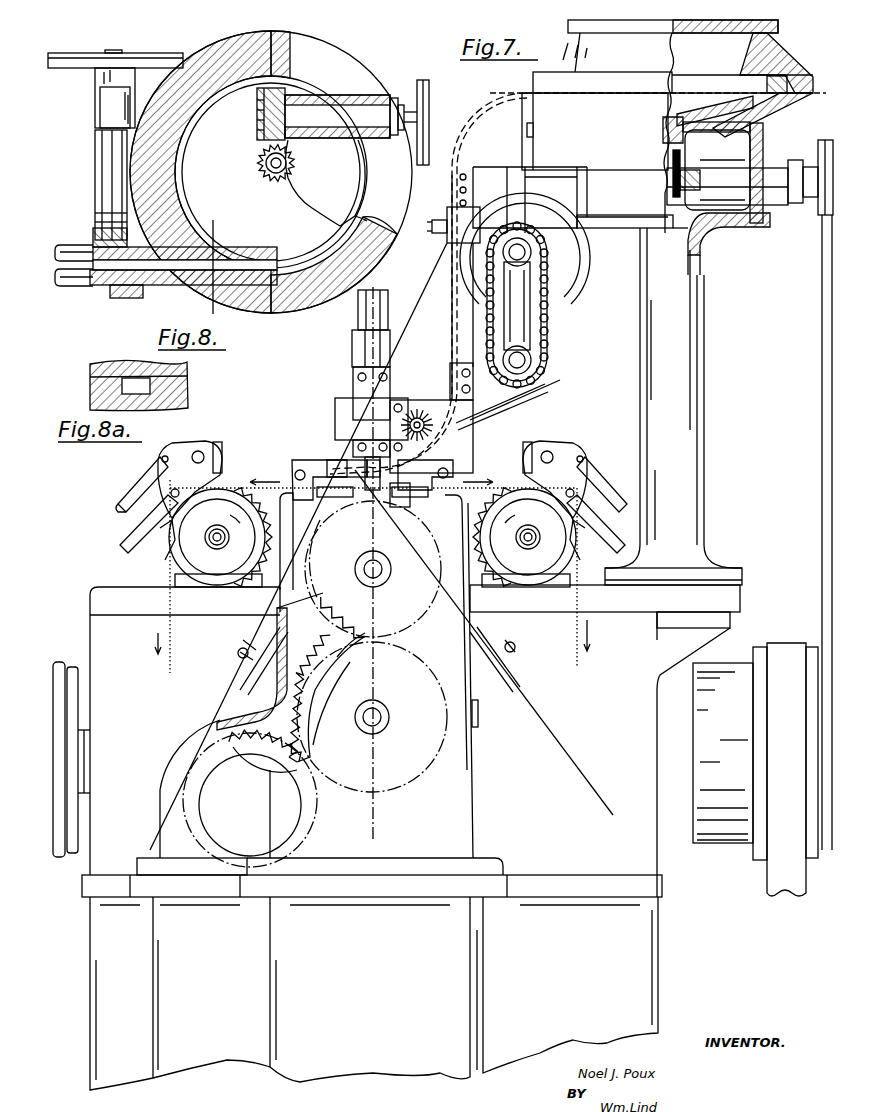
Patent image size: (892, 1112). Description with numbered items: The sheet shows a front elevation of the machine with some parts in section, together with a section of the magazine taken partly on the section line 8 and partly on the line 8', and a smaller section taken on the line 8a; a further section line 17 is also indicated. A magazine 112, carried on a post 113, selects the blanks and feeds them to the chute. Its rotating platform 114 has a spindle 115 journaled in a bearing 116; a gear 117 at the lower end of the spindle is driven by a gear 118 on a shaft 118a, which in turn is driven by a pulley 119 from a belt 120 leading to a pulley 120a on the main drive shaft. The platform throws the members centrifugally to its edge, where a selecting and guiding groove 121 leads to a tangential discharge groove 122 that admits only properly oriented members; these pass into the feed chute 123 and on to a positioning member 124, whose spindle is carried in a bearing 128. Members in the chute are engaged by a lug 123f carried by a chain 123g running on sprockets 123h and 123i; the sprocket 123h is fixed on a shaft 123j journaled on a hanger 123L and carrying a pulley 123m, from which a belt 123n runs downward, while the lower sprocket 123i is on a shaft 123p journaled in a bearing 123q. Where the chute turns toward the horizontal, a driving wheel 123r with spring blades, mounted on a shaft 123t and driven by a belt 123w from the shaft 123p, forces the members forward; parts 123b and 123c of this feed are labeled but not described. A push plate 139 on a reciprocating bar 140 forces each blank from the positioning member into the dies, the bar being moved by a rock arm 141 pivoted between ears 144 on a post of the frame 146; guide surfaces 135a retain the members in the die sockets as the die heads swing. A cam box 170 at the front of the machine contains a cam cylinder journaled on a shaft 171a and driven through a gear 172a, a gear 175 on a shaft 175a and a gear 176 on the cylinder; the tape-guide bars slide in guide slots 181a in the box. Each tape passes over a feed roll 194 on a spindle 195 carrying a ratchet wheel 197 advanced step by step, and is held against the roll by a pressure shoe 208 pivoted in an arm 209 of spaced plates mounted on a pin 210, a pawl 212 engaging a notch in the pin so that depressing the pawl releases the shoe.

In FIG. 7, the section line 8— 8 is at (649, 94).
In FIG. 7, the section line 8' is at (664, 173).
In FIG. 8, the section line 8a— 8a is at (218, 268).
In FIG. 7, the section line 17— 17 is at (371, 561).
In FIG. 8, the magazine 112 is at (222, 47).
In FIG. 7, the magazine 112 is at (760, 68).
In FIG. 7, the post 113 is at (702, 352).
In FIG. 8, the rotating platform 114 is at (302, 208).
In FIG. 7, the rotating platform 114 is at (710, 114).
In FIG. 8, the spindle 115 is at (274, 172).
In FIG. 7, the spindle 115 is at (670, 138).
In FIG. 7, the bearing 116 is at (694, 157).
In FIG. 8, the gear 117 is at (294, 170).
In FIG. 7, the gear 117 is at (703, 184).
In FIG. 8, the gear 118 is at (279, 88).
In FIG. 8, the shaft 118a is at (322, 112).
In FIG. 7, the shaft 118a is at (790, 199).
In FIG. 8, the pulley 119 is at (422, 98).
In FIG. 7, the pulley 119 is at (818, 143).
In FIG. 7, the belt 120 is at (822, 278).
In FIG. 7, the pulley 120a is at (820, 650).
In FIG. 8, the selecting and guiding groove 121 is at (178, 170).
In FIG. 7, the selecting and guiding groove 121 is at (770, 88).
In FIG. 8, the tangential discharge groove 122 is at (200, 266).
In FIG. 8A, the tangential discharge groove 122 is at (137, 362).
In FIG. 7, the feed chute 123 is at (458, 340).
In FIG. 7, the hanger 123L is at (537, 175).
In FIG. 7, the shaft 123j is at (528, 243).
In FIG. 7, the lug 123f is at (480, 225).
In FIG. 7, the clamp bolt 123b is at (448, 241).
In FIG. 7, the sprocket 123h is at (532, 261).
In FIG. 7, the pulley 123m is at (578, 264).
In FIG. 7, the bearing 123q is at (548, 309).
In FIG. 7, the chain 123g is at (534, 333).
In FIG. 7, the shaft 123p is at (533, 352).
In FIG. 7, the sprocket 123i is at (536, 367).
In FIG. 7, the belt 123w is at (519, 392).
In FIG. 7, the belt 123n is at (502, 401).
In FIG. 7, the shaft 123t is at (464, 421).
In FIG. 7, the driving wheel 123r is at (428, 428).
In FIG. 7, the slide arm 123c is at (465, 355).
In FIG. 7, the positioning member 124 is at (340, 462).
In FIG. 7, the bearing 128 is at (300, 460).
In FIG. 7, the guide surfaces 135a is at (321, 500).
In FIG. 7, the push plate 139 is at (362, 434).
In FIG. 7, the reciprocating bar 140 is at (355, 356).
In FIG. 7, the rock arm 141 is at (383, 297).
In FIG. 7, the ears 144 is at (352, 334).
In FIG. 7, the frame 146 is at (132, 610).
In FIG. 7, the cam box 170 is at (474, 771).
In FIG. 7, the shaft 171a is at (366, 569).
In FIG. 7, the gear 172a is at (224, 736).
In FIG. 7, the gear 175 is at (332, 663).
In FIG. 7, the shaft 175a is at (384, 715).
In FIG. 7, the gear 176 is at (330, 618).
In FIG. 7, the guide slots 181a is at (337, 514).
In FIG. 7, the feed roll 194 is at (223, 582).
In FIG. 7, the spindle 195 is at (215, 545).
In FIG. 7, the ratchet wheel 197 is at (232, 486).
In FIG. 7, the pressure shoe 208 is at (162, 534).
In FIG. 7, the arm 209 is at (126, 543).
In FIG. 7, the pin 210 is at (203, 448).
In FIG. 7, the pawl 212 is at (132, 500).